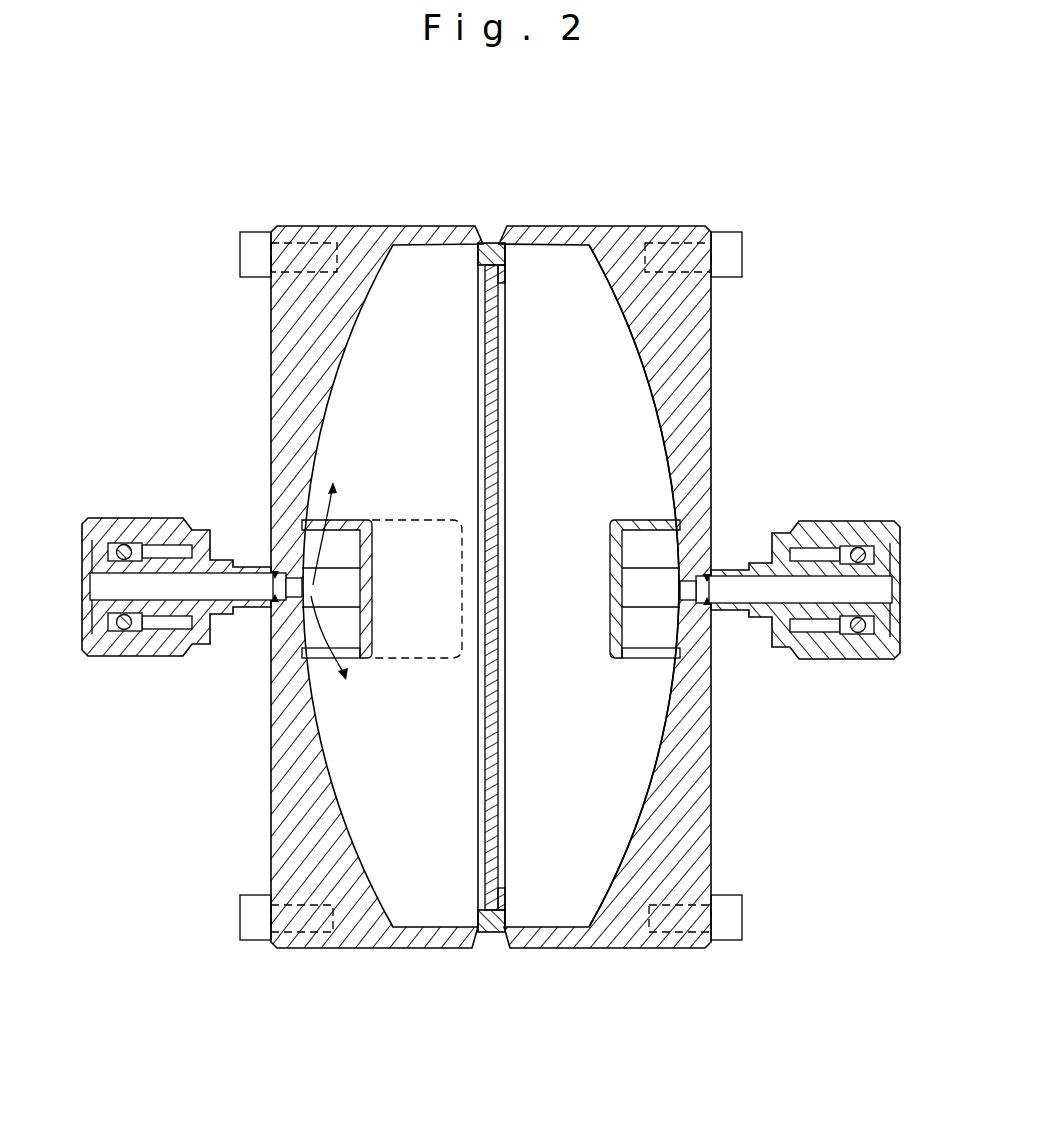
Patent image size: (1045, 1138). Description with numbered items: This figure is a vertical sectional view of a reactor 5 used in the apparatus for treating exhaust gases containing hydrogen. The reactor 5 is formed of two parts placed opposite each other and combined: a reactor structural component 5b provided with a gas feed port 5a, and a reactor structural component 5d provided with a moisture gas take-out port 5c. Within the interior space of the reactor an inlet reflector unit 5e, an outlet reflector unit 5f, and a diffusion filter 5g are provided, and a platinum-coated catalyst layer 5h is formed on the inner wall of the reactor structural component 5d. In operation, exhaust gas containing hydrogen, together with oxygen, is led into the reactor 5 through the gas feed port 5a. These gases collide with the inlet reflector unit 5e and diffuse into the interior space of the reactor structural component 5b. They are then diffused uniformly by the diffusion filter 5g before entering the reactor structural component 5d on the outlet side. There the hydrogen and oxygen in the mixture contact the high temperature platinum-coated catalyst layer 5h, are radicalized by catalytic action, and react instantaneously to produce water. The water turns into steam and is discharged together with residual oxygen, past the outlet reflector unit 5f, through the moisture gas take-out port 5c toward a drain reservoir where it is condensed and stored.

The reactor 5 is at (670, 188).
The gas feed port 5a is at (138, 585).
The reactor structural component 5b is at (300, 362).
The moisture gas take-out port 5c is at (838, 588).
The reactor structural component 5d is at (685, 348).
The inlet reflector unit 5e is at (366, 664).
The outlet reflector unit 5f is at (610, 668).
The diffusion filter 5g is at (492, 410).
The platinum-coated catalyst layer 5h is at (656, 436).